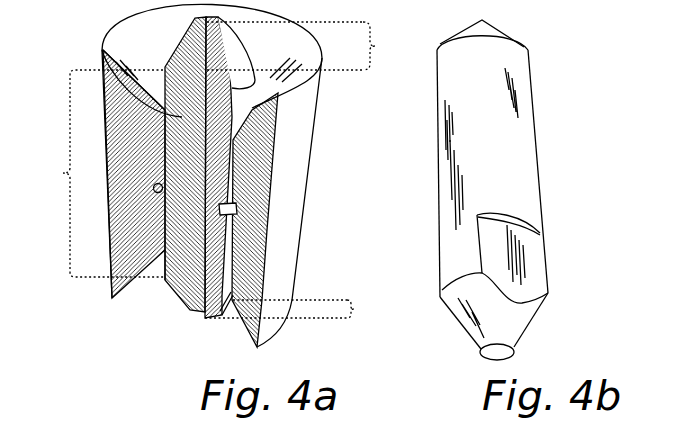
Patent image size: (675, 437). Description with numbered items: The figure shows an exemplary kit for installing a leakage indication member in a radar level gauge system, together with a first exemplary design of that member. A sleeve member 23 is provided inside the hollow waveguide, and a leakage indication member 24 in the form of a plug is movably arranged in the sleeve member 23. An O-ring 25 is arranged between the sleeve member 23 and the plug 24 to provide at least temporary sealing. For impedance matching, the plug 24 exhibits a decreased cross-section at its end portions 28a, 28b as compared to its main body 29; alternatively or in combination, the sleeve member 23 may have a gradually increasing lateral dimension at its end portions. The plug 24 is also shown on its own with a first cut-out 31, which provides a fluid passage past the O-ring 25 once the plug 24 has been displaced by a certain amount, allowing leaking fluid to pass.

In FIG. 4a, the sleeve member 23 is at (294, 173).
In FIG. 4a, the leakage indication member 24 is at (185, 117).
In FIG. 4b, the leakage indication member 24 is at (554, 134).
In FIG. 4a, the O-ring 25 is at (238, 208).
In FIG. 4a, the end portion 28a is at (313, 46).
In FIG. 4a, the end portion 28b is at (304, 310).
In FIG. 4a, the main body 29 is at (96, 173).
In FIG. 4b, the first cut-out 31 is at (538, 260).